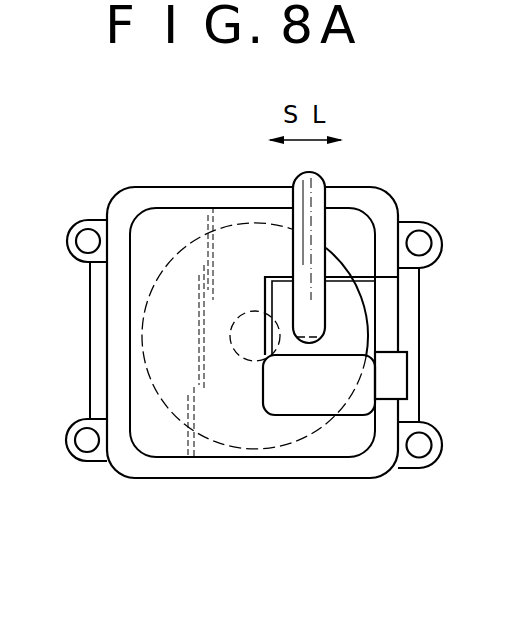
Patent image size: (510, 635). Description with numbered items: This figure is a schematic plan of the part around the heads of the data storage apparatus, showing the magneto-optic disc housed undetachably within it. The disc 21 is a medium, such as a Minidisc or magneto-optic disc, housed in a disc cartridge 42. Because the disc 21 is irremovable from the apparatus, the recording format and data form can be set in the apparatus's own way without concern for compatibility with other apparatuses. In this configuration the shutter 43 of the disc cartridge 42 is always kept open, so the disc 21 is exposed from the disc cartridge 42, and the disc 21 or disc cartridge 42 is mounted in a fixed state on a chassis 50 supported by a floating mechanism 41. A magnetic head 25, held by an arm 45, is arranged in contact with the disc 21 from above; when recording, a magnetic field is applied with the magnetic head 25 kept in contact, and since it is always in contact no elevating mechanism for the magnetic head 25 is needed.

The disc 21 is at (180, 252).
The magnetic head 25 is at (370, 338).
The floating mechanism 41 is at (88, 240).
The disc cartridge 42 is at (163, 440).
The shutter 43 is at (357, 403).
The arm 45 is at (293, 248).
The chassis 50 is at (105, 352).